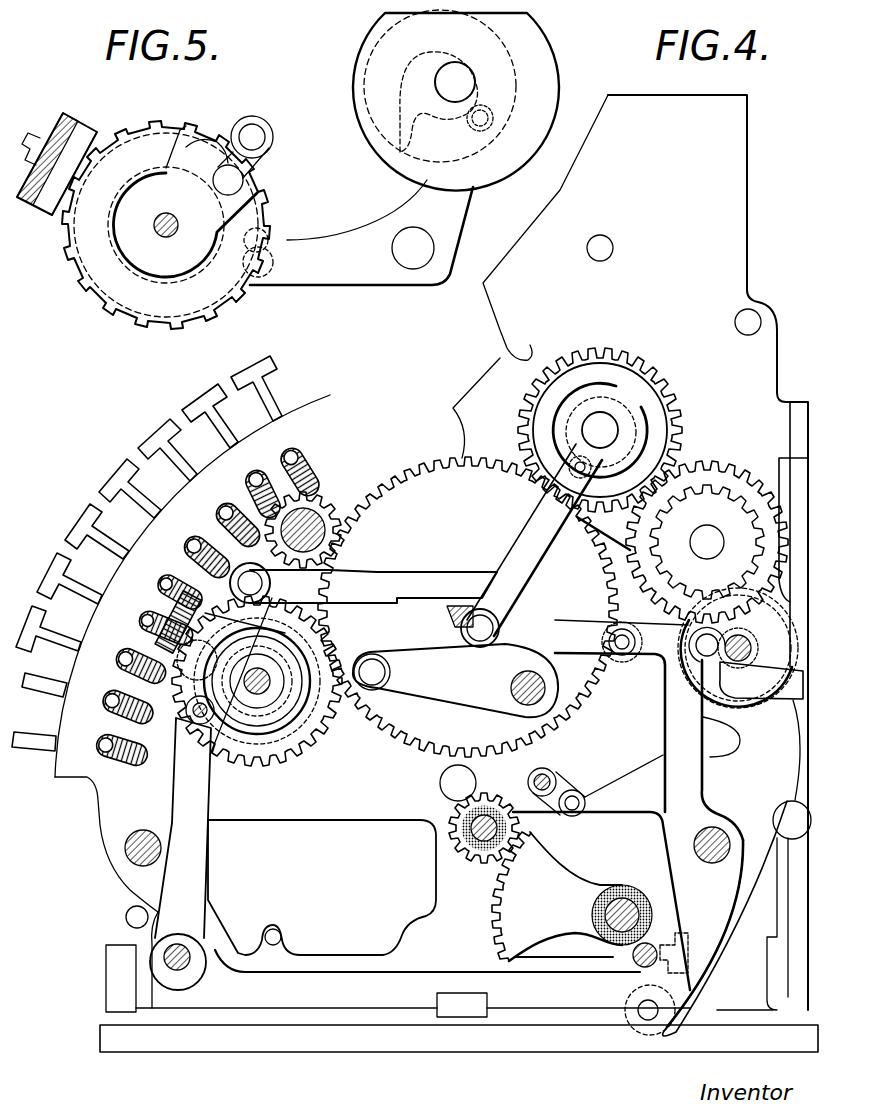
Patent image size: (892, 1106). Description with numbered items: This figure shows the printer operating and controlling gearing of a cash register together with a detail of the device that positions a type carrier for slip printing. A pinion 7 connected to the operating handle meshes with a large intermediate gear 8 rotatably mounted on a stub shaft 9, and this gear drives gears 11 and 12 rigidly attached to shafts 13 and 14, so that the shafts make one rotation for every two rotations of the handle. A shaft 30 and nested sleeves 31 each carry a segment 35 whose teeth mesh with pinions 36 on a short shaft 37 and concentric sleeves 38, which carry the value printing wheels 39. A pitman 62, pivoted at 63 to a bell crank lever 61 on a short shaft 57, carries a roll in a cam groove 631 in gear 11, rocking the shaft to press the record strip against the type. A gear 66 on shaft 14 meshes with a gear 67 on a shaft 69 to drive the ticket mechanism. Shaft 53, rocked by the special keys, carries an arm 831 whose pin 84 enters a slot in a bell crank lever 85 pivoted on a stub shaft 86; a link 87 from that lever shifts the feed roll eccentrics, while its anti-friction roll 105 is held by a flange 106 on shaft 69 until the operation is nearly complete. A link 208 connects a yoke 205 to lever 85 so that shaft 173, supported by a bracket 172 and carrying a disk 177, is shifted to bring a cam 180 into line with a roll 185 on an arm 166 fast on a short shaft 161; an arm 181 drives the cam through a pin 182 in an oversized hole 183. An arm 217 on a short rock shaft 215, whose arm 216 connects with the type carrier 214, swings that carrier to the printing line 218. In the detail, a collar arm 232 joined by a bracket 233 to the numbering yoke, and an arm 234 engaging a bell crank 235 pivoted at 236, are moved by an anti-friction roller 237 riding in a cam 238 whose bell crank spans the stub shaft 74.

In FIG. 5, the printing line 218 is at (165, 120).
In FIG. 5, the value printing wheels 39 is at (140, 320).
In FIG. 5, the type carrier 214 is at (187, 148).
In FIG. 5, the short shaft 37 is at (180, 236).
In FIG. 4, the short shaft 37 is at (462, 818).
In FIG. 5, the short rock shaft 215 is at (258, 133).
In FIG. 4, the short rock shaft 215 is at (543, 775).
In FIG. 5, the arm 216 is at (250, 160).
In FIG. 5, the arm 234 is at (262, 216).
In FIG. 5, the bracket 233 is at (50, 122).
In FIG. 5, the arm 232 is at (54, 215).
In FIG. 5, the cam 238 is at (540, 45).
In FIG. 5, the stub shaft 74 is at (470, 83).
In FIG. 5, the anti-friction roller 237 is at (492, 124).
In FIG. 5, the bell crank 235 is at (340, 238).
In FIG. 5, the pivot 236 is at (414, 262).
In FIG. 4, the gear 11 is at (606, 354).
In FIG. 4, the cam groove 631 is at (610, 417).
In FIG. 4, the shaft 13 is at (606, 430).
In FIG. 4, the gear 12 is at (723, 466).
In FIG. 4, the gear 66 is at (699, 500).
In FIG. 4, the shaft 14 is at (710, 533).
In FIG. 4, the intermediate gear 8 is at (418, 466).
In FIG. 4, the pitman 62 is at (520, 546).
In FIG. 4, the link 208 is at (415, 572).
In FIG. 4, the pin 182 is at (332, 585).
In FIG. 4, the stub shaft 9 is at (445, 609).
In FIG. 4, the pivot 63 is at (481, 642).
In FIG. 4, the bell crank lever 61 is at (463, 700).
In FIG. 4, the short shaft 57 is at (511, 685).
In FIG. 4, the gear 67 is at (668, 637).
In FIG. 4, the flange 106 is at (704, 733).
In FIG. 4, the shaft 69 is at (757, 634).
In FIG. 4, the anti-friction roll 105 is at (690, 672).
In FIG. 4, the link 87 is at (790, 705).
In FIG. 4, the bell crank lever 85 is at (718, 940).
In FIG. 4, the pin 84 is at (646, 1016).
In FIG. 4, the stub shaft 86 is at (720, 863).
In FIG. 4, the shaft 53 is at (630, 962).
In FIG. 4, the arm 831 is at (632, 983).
In FIG. 4, the segment 35 is at (555, 882).
In FIG. 4, the nested sleeves 31 is at (605, 895).
In FIG. 4, the shaft 30 is at (626, 902).
In FIG. 4, the concentric sleeves 38 is at (486, 808).
In FIG. 4, the pinions 36 is at (470, 858).
In FIG. 4, the arm 217 is at (565, 785).
In FIG. 4, the disk 177 is at (282, 750).
In FIG. 4, the shaft 173 is at (300, 708).
In FIG. 4, the arm 181 is at (256, 748).
In FIG. 4, the hole 183 is at (184, 703).
In FIG. 4, the anti-friction roll 185 is at (200, 722).
In FIG. 4, the arm 166 is at (172, 806).
In FIG. 4, the short shaft 161 is at (185, 966).
In FIG. 4, the pinion 7 is at (322, 510).
In FIG. 4, the cam 180 is at (192, 572).
In FIG. 4, the yoke 205 is at (158, 594).
In FIG. 4, the bracket 172 is at (138, 630).